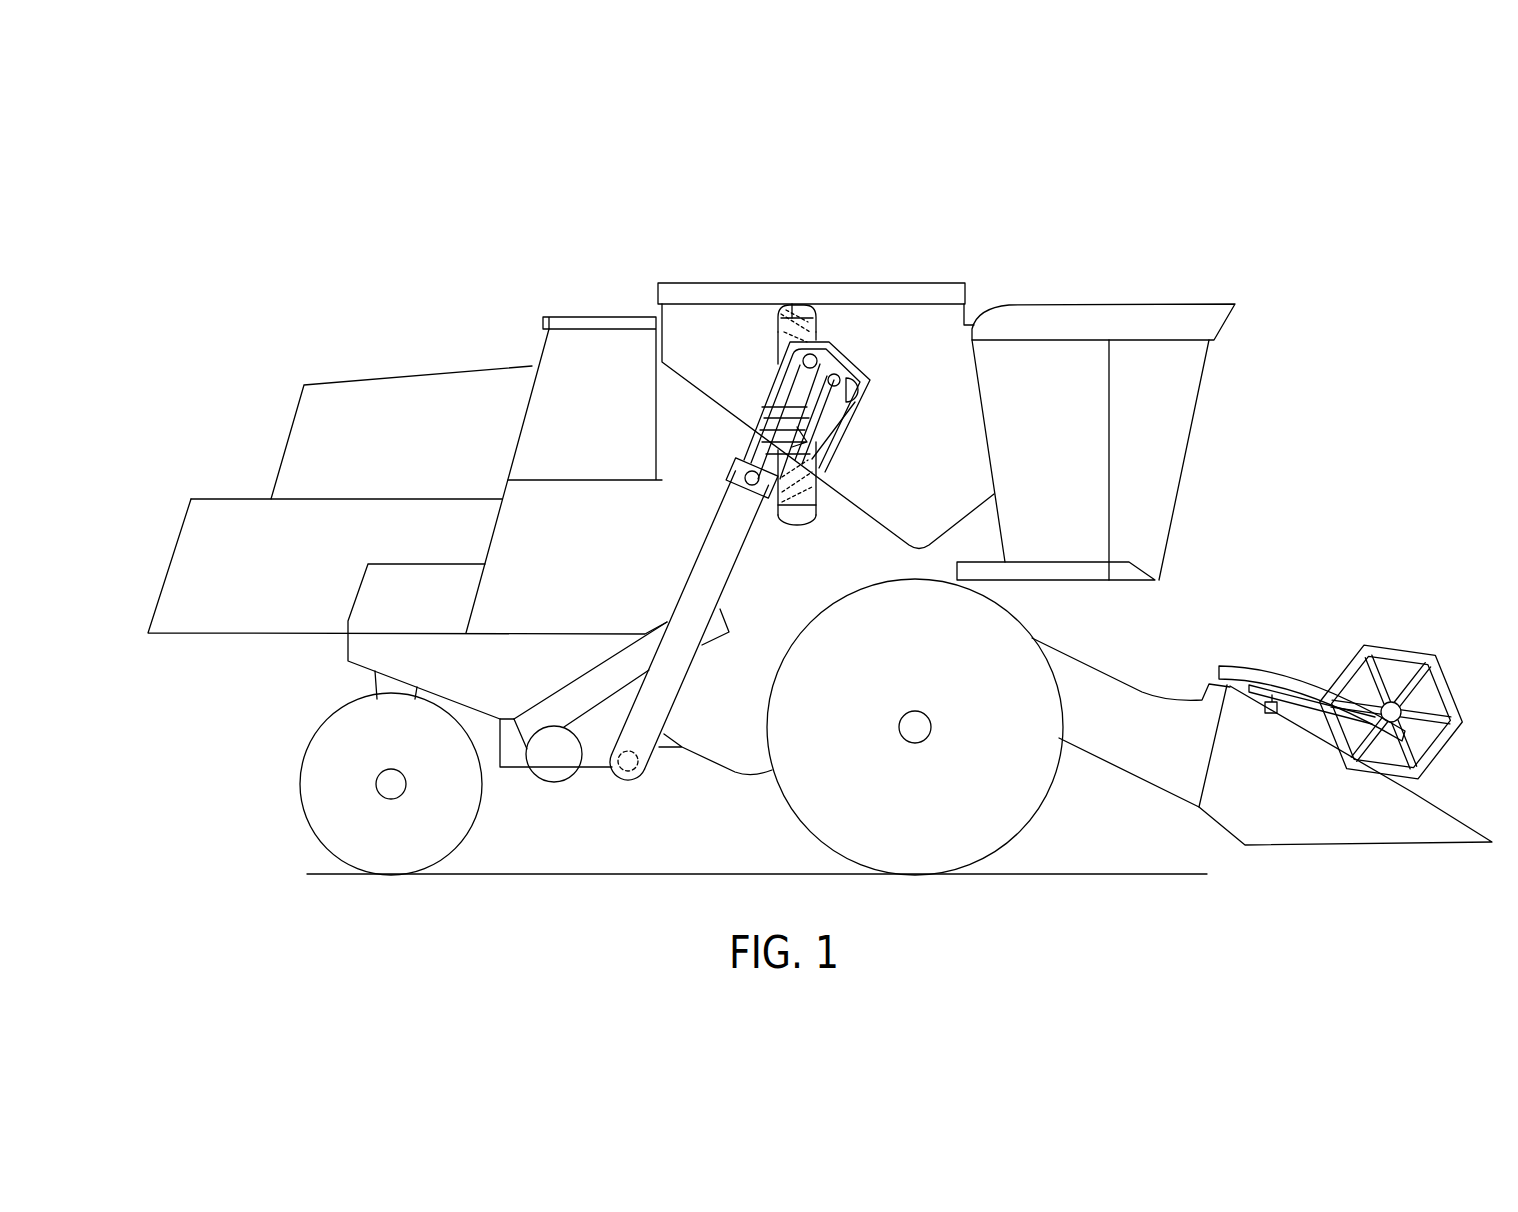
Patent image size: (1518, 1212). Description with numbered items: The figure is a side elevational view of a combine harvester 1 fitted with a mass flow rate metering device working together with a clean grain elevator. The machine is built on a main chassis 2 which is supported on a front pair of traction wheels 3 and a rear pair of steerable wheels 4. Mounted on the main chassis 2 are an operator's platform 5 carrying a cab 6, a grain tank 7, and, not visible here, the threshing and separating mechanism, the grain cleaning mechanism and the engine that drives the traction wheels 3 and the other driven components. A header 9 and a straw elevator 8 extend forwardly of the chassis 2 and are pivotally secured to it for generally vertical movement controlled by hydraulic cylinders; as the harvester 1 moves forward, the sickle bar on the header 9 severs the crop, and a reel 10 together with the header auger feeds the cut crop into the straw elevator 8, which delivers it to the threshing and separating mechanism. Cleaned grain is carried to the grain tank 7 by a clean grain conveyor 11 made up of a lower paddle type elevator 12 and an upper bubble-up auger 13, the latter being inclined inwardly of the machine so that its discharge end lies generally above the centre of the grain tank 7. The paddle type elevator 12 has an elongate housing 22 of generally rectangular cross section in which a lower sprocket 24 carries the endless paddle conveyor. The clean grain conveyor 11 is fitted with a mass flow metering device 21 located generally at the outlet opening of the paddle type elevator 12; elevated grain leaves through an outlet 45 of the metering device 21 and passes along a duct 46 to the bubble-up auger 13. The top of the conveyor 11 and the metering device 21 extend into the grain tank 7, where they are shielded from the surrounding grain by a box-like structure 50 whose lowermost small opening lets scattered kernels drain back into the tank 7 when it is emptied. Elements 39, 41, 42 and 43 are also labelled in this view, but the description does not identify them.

The combine harvester 1 is at (1197, 259).
The main chassis 2 is at (362, 644).
The front pair of traction wheels 3 is at (999, 812).
The rear pair of steerable wheels 4 is at (444, 807).
The operator's platform 5 is at (1079, 566).
The cab 6 is at (1204, 312).
The grain tank 7 is at (669, 321).
The straw elevator 8 is at (1114, 746).
The header 9 is at (1291, 659).
The reel 10 is at (1401, 649).
The clean grain conveyor 11 is at (655, 575).
The paddle type elevator 12 is at (732, 549).
The bubble-up auger 13 is at (807, 296).
The mass flow metering device 21 is at (864, 376).
The elongate housing 22 is at (739, 432).
The lower sprocket 24 is at (622, 769).
The rod 39 is at (762, 392).
The cylinder bottom 41 is at (806, 524).
The cylinder 42 is at (771, 339).
The cylinder top 43 is at (784, 296).
The outlet 45 is at (850, 390).
The duct 46 is at (836, 439).
The box-like structure 50 is at (849, 366).